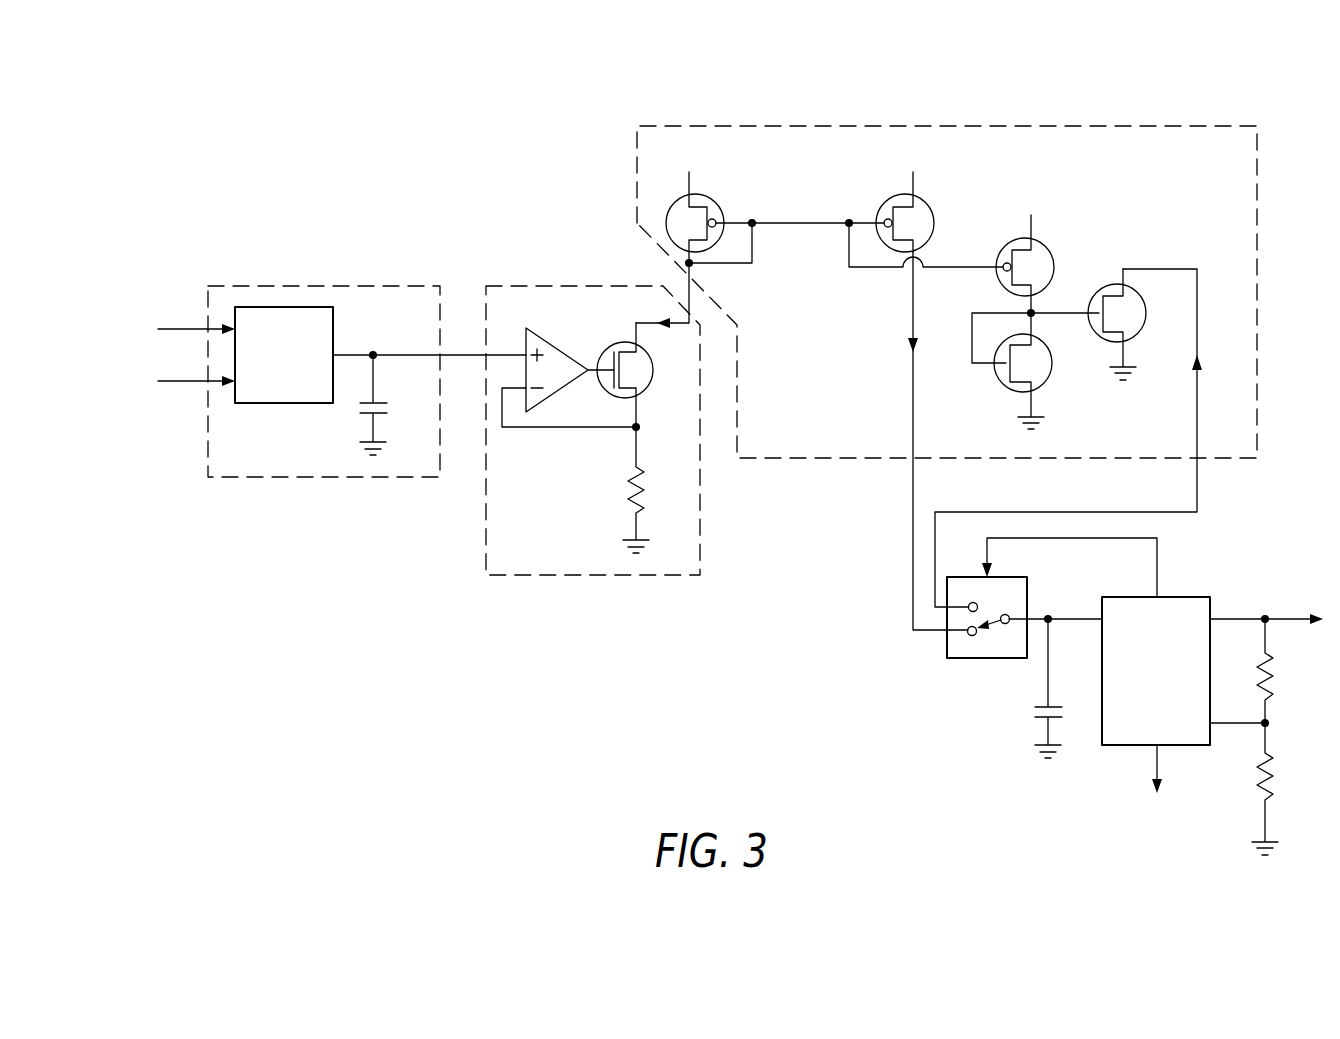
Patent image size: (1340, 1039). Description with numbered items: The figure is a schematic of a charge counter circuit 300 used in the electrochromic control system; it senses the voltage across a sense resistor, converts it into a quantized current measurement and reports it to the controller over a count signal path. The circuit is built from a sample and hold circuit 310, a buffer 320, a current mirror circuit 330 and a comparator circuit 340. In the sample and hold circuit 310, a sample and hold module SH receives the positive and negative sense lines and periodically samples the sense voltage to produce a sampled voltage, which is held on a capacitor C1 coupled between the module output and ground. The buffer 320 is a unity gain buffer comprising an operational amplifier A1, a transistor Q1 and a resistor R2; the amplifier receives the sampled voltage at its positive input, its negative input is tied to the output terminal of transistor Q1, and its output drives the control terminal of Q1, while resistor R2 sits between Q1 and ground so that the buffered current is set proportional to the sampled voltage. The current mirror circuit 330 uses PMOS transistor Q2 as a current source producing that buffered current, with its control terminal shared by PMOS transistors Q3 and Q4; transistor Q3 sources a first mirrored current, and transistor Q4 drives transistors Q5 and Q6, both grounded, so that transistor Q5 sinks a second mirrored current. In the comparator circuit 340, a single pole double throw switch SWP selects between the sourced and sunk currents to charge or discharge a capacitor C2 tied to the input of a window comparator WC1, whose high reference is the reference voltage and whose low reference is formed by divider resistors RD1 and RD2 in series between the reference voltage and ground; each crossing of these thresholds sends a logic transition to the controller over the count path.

The charge counter circuit 300 is at (505, 742).
The sample and hold circuit 310 is at (340, 549).
The buffer 320 is at (603, 652).
The current mirror circuit 330 is at (1083, 118).
The comparator circuit 340 is at (967, 710).
The sample and hold module SH is at (333, 326).
The capacitor C1 is at (352, 409).
The operational amplifier A1 is at (552, 337).
The transistor Q1 is at (653, 368).
The resistor R2 is at (627, 493).
The transistor Q2 is at (716, 202).
The transistor Q3 is at (926, 203).
The transistor Q4 is at (1042, 247).
The transistor Q5 is at (1143, 300).
The transistor Q6 is at (1052, 361).
The 1FormC switch SWP is at (1017, 578).
The capacitor C2 is at (1033, 712).
The window comparator WC1 is at (1200, 597).
The divider resistor RD1 is at (1273, 668).
The divider resistor RD2 is at (1273, 770).